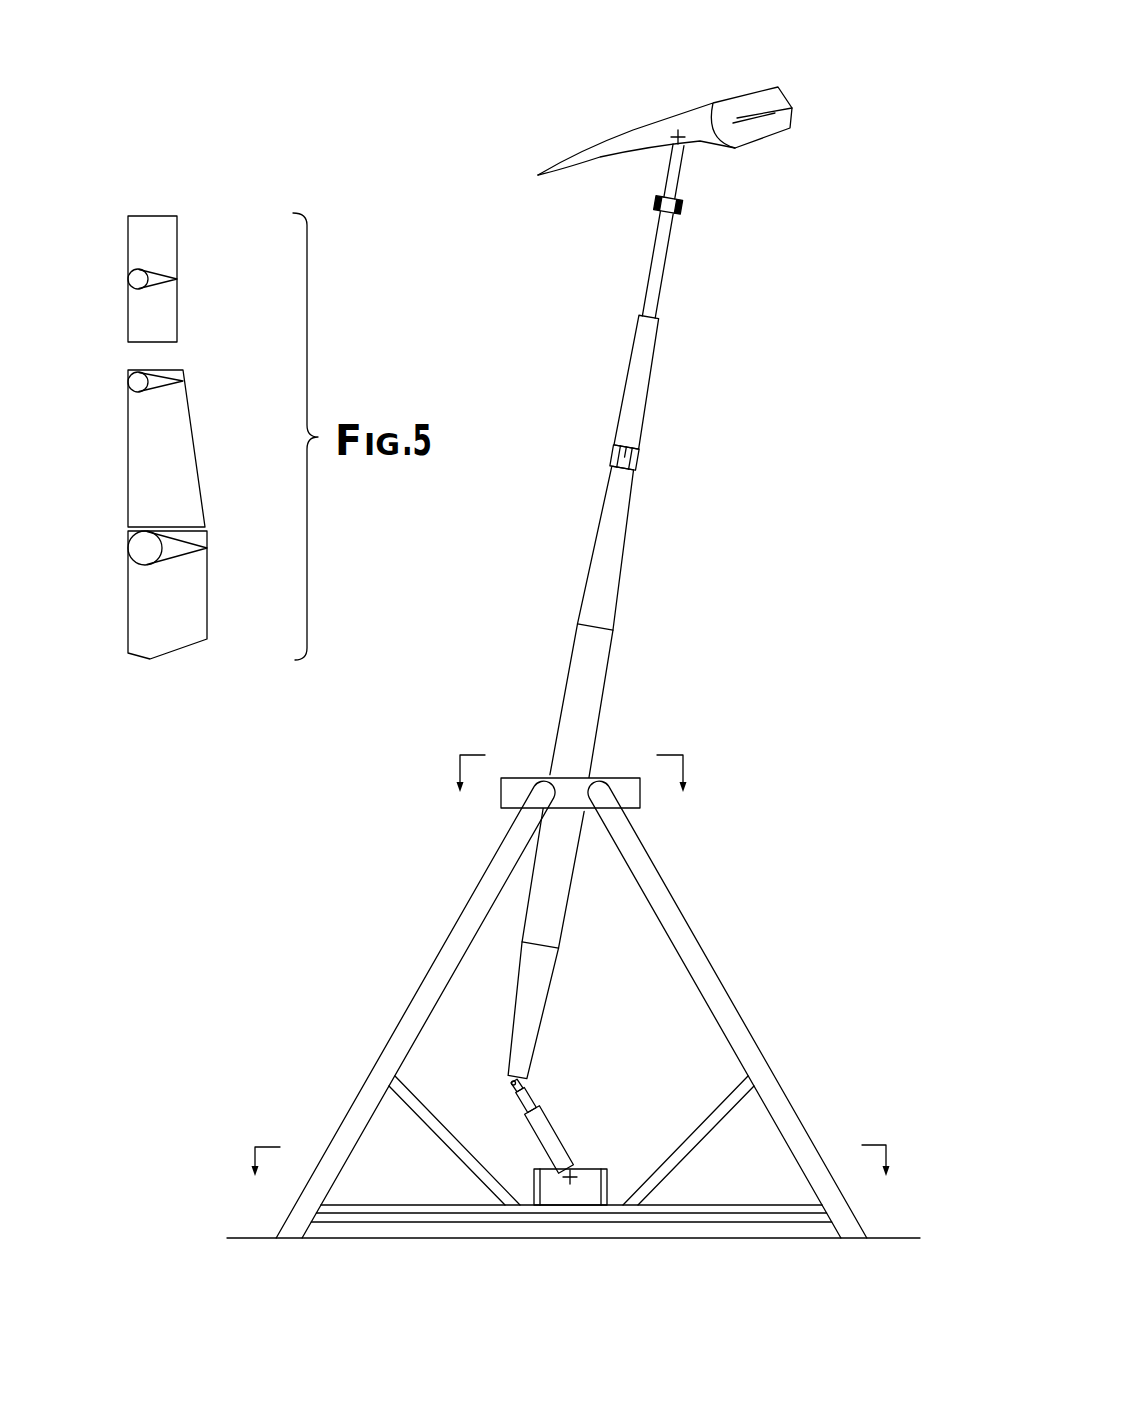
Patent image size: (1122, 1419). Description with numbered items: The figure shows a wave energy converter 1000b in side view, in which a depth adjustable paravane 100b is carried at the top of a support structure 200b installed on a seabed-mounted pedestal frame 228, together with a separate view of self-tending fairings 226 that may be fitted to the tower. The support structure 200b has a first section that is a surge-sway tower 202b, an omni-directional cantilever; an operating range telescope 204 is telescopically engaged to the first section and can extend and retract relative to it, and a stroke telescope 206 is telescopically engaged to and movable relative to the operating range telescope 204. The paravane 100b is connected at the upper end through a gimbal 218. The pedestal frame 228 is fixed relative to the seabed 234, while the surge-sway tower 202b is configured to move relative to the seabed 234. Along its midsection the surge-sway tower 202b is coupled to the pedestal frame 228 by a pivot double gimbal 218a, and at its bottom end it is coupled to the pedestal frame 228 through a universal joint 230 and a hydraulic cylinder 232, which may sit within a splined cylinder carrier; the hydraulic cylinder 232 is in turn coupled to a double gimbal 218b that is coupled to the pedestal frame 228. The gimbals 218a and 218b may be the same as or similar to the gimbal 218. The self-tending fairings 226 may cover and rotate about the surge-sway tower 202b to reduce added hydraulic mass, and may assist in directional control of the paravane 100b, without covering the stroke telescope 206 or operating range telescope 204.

In FIG. 5, the self-tending fairings 226 is at (128, 236).
In FIG. 6, the wave energy converter 1000b is at (820, 64).
In FIG. 6, the paravane 100b is at (602, 143).
In FIG. 6, the gimbal 218 is at (680, 142).
In FIG. 6, the stroke telescope 206 is at (670, 245).
In FIG. 6, the operating range telescope 204 is at (632, 358).
In FIG. 6, the surge-sway tower 202b is at (628, 535).
In FIG. 6, the support structure 200b is at (690, 586).
In FIG. 6, the pivot double gimbal 218a is at (578, 778).
In FIG. 6, the pedestal frame 228 is at (712, 960).
In FIG. 6, the universal joint 230 is at (512, 1082).
In FIG. 6, the hydraulic cylinder 232 is at (557, 1118).
In FIG. 6, the double gimbal 218b is at (577, 1180).
In FIG. 6, the seabed 234 is at (235, 1238).